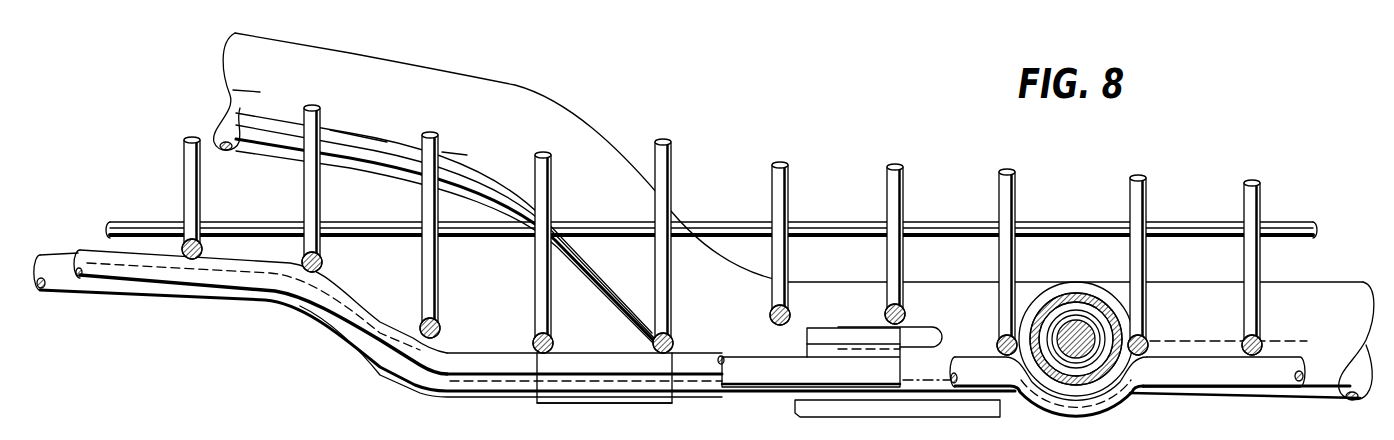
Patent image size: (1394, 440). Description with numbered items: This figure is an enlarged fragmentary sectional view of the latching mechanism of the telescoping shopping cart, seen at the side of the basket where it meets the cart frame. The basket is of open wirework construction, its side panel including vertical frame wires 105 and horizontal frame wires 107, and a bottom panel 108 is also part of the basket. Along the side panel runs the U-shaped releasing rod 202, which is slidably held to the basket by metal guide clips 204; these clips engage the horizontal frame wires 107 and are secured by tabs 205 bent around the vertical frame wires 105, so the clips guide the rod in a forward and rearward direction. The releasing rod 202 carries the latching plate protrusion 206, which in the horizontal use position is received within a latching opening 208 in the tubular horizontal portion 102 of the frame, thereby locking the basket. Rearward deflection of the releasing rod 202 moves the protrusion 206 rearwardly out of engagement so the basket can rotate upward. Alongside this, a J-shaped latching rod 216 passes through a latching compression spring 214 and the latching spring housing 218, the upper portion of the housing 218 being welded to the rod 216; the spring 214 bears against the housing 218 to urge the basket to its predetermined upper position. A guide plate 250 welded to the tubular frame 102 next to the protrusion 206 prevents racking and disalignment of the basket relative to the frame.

The tubular horizontal portion 102 is at (517, 103).
The vertical frame wires 105 is at (552, 333).
The horizontal frame wires 107 is at (258, 278).
The bottom panel 108 is at (1078, 217).
The releasing rod 202 is at (133, 290).
The guide clips 204 is at (625, 395).
The tabs 205 is at (532, 339).
The latching plate protrusion 206 is at (827, 330).
The latching openings 208 is at (937, 328).
The latching compression spring 214 is at (1107, 377).
The latching rod 216 is at (1083, 327).
The latching spring housing 218 is at (1044, 405).
The guide plates 250 is at (913, 405).